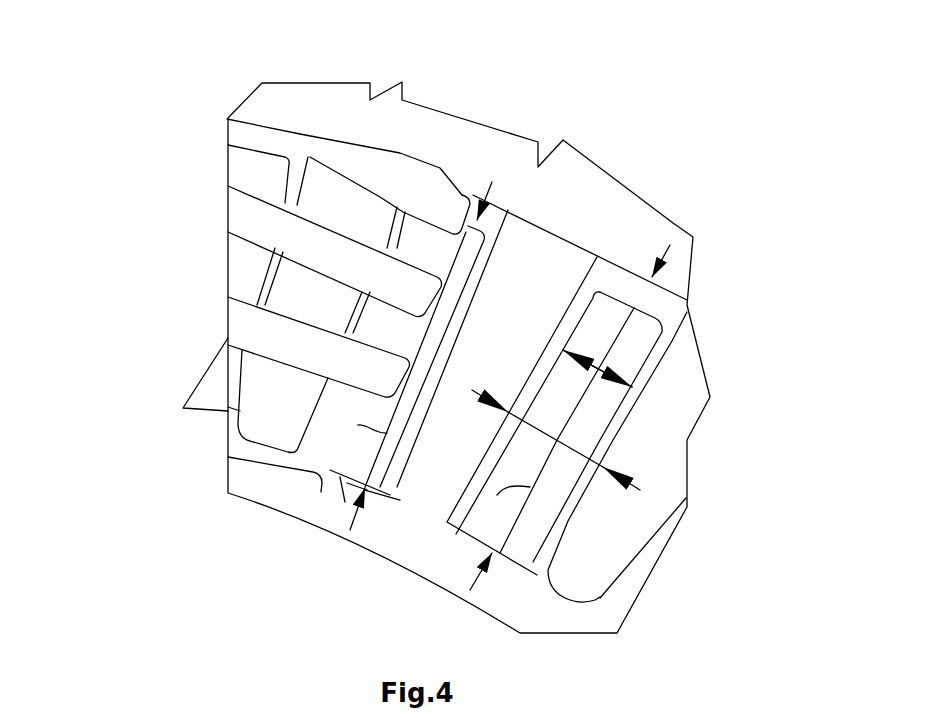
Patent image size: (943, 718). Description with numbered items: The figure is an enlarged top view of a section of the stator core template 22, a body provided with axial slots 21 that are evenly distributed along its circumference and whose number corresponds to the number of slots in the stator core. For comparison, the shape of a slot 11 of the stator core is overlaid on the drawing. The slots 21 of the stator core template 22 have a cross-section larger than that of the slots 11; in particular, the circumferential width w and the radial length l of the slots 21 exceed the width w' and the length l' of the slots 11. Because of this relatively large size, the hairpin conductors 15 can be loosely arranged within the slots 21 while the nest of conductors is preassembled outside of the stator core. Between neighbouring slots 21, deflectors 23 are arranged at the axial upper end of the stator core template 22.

The slot 11 is at (643, 316).
The hairpin conductor 15 is at (262, 113).
The axial slot 21 is at (493, 212).
The stator core template 22 is at (613, 200).
The deflector 23 is at (420, 497).